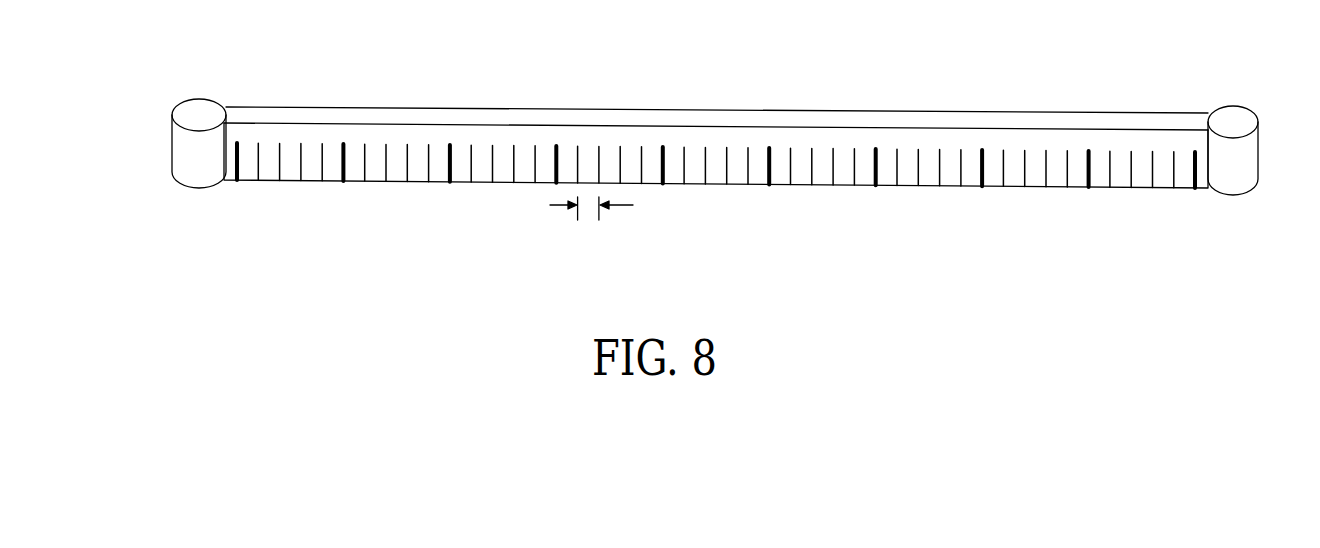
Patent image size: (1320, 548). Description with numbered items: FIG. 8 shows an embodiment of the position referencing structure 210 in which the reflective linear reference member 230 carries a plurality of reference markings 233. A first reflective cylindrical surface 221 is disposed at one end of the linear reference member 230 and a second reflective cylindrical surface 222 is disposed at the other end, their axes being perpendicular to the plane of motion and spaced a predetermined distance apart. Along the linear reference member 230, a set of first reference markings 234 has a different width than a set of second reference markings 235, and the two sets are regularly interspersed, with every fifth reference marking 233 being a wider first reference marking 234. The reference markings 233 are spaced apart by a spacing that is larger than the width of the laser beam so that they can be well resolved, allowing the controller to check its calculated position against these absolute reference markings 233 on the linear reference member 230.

The position referencing structure 210 is at (256, 44).
The first reflective cylindrical surface 221 is at (190, 162).
The second reflective cylindrical surface 222 is at (1237, 181).
The linear reference member 230 is at (505, 126).
The reference markings 233 is at (237, 157).
The first reference markings 234 is at (344, 181).
The second reference markings 235 is at (410, 178).